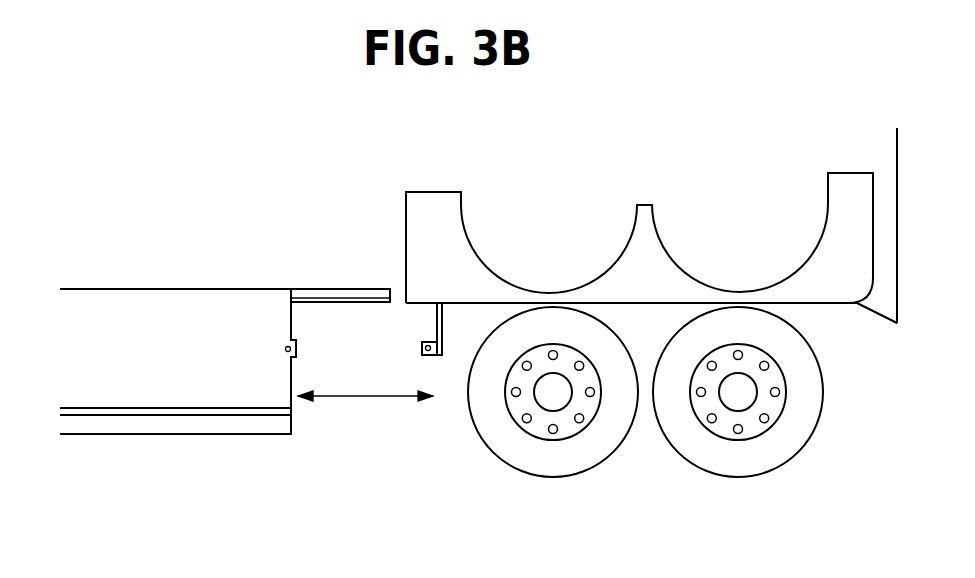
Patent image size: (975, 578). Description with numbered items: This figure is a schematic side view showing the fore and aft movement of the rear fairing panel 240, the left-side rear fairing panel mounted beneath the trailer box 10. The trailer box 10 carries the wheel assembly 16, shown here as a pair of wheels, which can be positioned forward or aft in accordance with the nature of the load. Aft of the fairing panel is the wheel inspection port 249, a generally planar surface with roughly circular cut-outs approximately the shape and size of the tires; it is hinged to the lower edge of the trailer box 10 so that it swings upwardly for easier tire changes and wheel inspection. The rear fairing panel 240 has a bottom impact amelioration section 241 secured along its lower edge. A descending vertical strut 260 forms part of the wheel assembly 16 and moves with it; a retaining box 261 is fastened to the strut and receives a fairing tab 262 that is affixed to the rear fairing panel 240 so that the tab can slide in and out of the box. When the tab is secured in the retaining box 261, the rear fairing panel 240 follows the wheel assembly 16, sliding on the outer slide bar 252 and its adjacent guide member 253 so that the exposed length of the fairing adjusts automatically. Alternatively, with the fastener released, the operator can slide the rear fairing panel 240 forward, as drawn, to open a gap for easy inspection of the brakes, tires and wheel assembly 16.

The trailer box 10 is at (248, 181).
The wheel assembly 16 is at (727, 462).
The rear fairing panel 240 is at (116, 318).
The bottom impact amelioration section 241 is at (117, 423).
The wheel inspection port 249 is at (845, 225).
The outer slide bar 252 is at (322, 302).
The upper guide 253 is at (322, 289).
The descending vertical strut 260 is at (442, 325).
The retaining box 261 is at (430, 357).
The fairing tab 262 is at (303, 350).